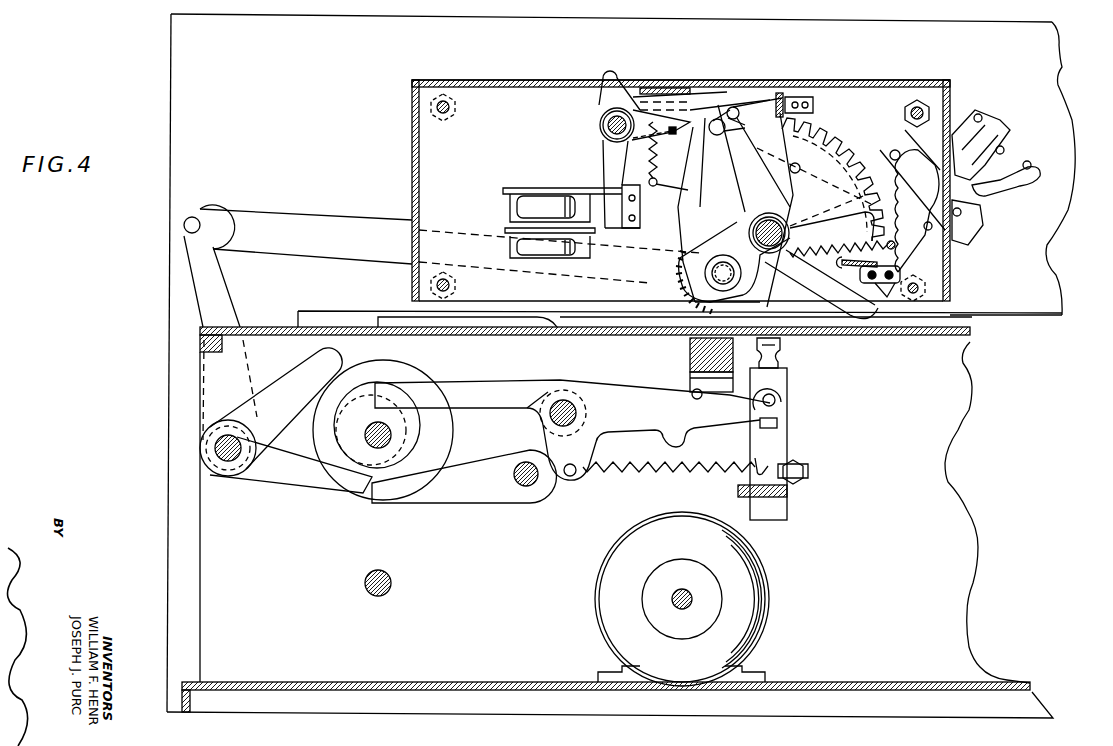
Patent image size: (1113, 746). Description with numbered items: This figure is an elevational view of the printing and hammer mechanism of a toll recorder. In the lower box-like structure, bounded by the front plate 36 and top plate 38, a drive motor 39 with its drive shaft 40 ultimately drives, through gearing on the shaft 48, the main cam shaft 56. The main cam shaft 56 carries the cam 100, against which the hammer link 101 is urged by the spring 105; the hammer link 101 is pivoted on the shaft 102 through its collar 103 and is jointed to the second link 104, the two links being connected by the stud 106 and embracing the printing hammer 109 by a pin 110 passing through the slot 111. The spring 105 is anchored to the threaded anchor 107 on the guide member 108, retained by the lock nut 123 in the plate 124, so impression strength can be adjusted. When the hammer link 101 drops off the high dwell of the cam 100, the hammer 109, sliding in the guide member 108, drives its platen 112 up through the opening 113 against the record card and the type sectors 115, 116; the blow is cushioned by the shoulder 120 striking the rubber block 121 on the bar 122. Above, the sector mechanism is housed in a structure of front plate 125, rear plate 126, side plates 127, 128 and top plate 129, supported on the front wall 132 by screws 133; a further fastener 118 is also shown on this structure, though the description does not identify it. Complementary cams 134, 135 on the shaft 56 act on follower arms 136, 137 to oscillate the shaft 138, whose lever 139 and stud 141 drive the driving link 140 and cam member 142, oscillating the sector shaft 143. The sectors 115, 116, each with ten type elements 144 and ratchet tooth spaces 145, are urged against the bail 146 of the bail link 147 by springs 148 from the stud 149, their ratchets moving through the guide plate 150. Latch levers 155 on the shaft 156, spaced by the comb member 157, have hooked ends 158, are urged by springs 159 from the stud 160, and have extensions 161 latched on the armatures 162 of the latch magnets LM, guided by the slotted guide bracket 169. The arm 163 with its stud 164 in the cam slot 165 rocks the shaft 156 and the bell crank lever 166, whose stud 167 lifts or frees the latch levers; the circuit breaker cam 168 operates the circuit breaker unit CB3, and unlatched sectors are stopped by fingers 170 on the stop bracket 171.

The front plate 36 is at (955, 428).
The top plate 38 is at (971, 333).
The drive motor 39 is at (600, 600).
The drive shaft 40 is at (685, 590).
The shaft 48 is at (366, 593).
The main cam shaft 56 is at (368, 432).
The cam 100 is at (425, 432).
The hammer link 101 is at (534, 382).
The shaft 102 is at (576, 410).
The collar 103 is at (585, 427).
The second link 104 is at (535, 393).
The spring 105 is at (697, 468).
The stud 106 is at (576, 475).
The threaded anchor 107 is at (758, 458).
The guide member 108 is at (738, 491).
The printing hammer 109 is at (762, 522).
The pin 110 is at (762, 402).
The slot 111 is at (778, 424).
The platen 112 is at (781, 358).
The opening 113 is at (782, 342).
The type sector 115 is at (740, 230).
The type sector 116 is at (712, 252).
The nut 118 is at (905, 113).
The shoulder 120 is at (700, 400).
The rubber block 121 is at (690, 380).
The bar 122 is at (690, 352).
The lock nut 123 is at (800, 481).
The plate 124 is at (800, 462).
The front plate 125 is at (418, 162).
The rear plate 126 is at (932, 313).
The side plate 127 is at (418, 125).
The side plate 128 is at (951, 272).
The top plate 129 is at (884, 80).
The front wall 132 is at (1064, 312).
The screws 133 is at (456, 104).
The complementary cam 134 is at (318, 428).
The complementary cam 135 is at (440, 448).
The follower arm 136 is at (290, 374).
The follower arm 137 is at (300, 490).
The shaft 138 is at (225, 465).
The lever 139 is at (228, 298).
The driving link 140 is at (306, 226).
The stud 141 is at (190, 221).
The cam member 142 is at (745, 198).
The sector shaft 143 is at (790, 215).
The type elements 144 is at (700, 302).
The ratchet tooth spaces 145 is at (840, 150).
The bail 146 is at (790, 168).
The bail link 147 is at (780, 190).
The springs 148 is at (842, 263).
The stud 149 is at (885, 244).
The guide plate 150 is at (813, 108).
The latch levers 155 is at (680, 87).
The shaft 156 is at (600, 117).
The comb member 157 is at (663, 87).
The hooked end 158 is at (768, 88).
The springs 159 is at (676, 160).
The stud 160 is at (680, 189).
The downwardly extending portions 161 is at (602, 143).
The armatures 162 is at (598, 186).
The arm 163 is at (716, 135).
The stud 164 is at (738, 118).
The cam slot 165 is at (818, 170).
The bell crank lever 166 is at (607, 74).
The stud 167 is at (660, 138).
The circuit breaker cam 168 is at (826, 284).
The slotted guide bracket 169 is at (636, 230).
The projecting fingers 170 is at (862, 278).
The stop bracket 171 is at (878, 290).
The latch magnets LM is at (512, 246).
The circuit breaker unit CB3 is at (1012, 155).